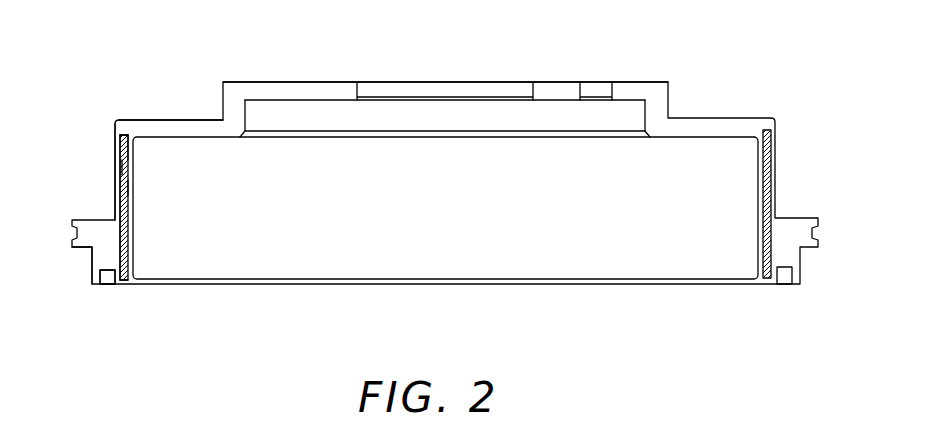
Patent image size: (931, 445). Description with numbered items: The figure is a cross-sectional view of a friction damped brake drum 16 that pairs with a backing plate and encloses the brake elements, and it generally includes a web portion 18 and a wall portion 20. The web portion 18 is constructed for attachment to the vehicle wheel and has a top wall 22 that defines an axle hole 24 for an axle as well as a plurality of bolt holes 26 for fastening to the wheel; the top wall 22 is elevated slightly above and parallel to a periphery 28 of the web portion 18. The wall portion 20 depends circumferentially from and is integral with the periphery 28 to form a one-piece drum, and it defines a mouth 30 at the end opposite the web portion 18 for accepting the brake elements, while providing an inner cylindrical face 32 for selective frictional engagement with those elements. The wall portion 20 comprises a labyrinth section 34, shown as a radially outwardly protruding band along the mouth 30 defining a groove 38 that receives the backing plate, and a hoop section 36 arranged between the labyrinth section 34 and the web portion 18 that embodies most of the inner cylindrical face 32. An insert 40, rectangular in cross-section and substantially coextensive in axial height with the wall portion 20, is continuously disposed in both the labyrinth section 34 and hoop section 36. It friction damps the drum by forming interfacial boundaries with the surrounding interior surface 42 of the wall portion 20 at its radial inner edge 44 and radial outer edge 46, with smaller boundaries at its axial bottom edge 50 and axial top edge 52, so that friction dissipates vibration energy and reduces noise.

The brake drum 16 is at (735, 76).
The web portion 18 is at (205, 66).
The wall portion 20 is at (76, 165).
The top wall 22 is at (278, 82).
The axle hole 24 is at (366, 90).
The bolt holes 26 is at (586, 90).
The periphery 28 is at (147, 120).
The mouth 30 is at (447, 273).
The inner cylindrical face 32 is at (134, 196).
The labyrinth section 34 is at (91, 250).
The hoop section 36 is at (119, 178).
The groove 38 is at (110, 284).
The insert 40 is at (127, 190).
The interior surface 42 is at (125, 167).
The radial inner edge 44 is at (129, 153).
The radial outer edge 46 is at (118, 140).
The axial bottom edge 50 is at (125, 281).
The axial top edge 52 is at (124, 134).